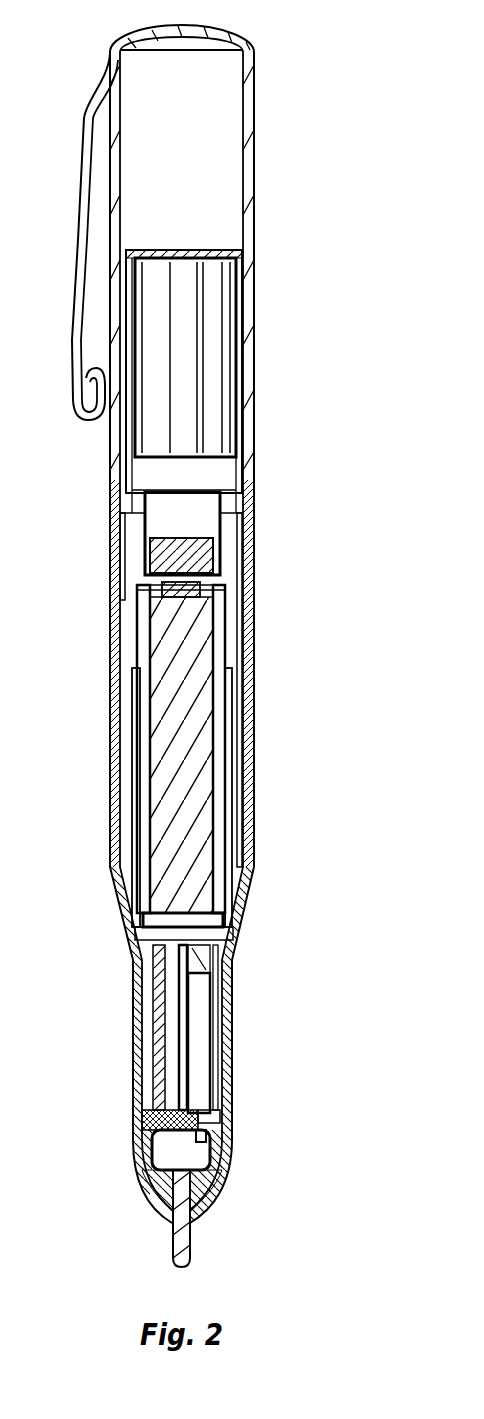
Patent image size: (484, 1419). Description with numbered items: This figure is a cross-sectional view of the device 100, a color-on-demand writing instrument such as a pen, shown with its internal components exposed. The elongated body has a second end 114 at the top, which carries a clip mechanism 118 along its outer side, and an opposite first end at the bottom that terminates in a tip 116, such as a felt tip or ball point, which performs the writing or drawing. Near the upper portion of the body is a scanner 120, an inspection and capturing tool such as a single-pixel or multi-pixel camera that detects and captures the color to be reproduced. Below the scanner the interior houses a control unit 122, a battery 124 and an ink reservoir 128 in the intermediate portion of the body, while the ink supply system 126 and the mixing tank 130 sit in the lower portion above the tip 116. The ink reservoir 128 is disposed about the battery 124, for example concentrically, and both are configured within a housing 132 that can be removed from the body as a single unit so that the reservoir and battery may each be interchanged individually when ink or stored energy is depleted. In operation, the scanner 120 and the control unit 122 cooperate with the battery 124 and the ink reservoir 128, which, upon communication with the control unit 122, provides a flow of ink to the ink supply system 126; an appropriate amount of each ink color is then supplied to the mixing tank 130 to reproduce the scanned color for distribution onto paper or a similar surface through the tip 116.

The device 100 is at (264, 32).
The second end 114 is at (180, 27).
The tip 116 is at (192, 1251).
The clip mechanism 118 is at (78, 247).
The scanner 120 is at (185, 355).
The control unit 122 is at (200, 552).
The battery 124 is at (200, 720).
The ink supply system 126 is at (203, 1023).
The ink reservoir 128 is at (130, 766).
The mixing tank 130 is at (195, 1152).
The housing 132 is at (226, 633).